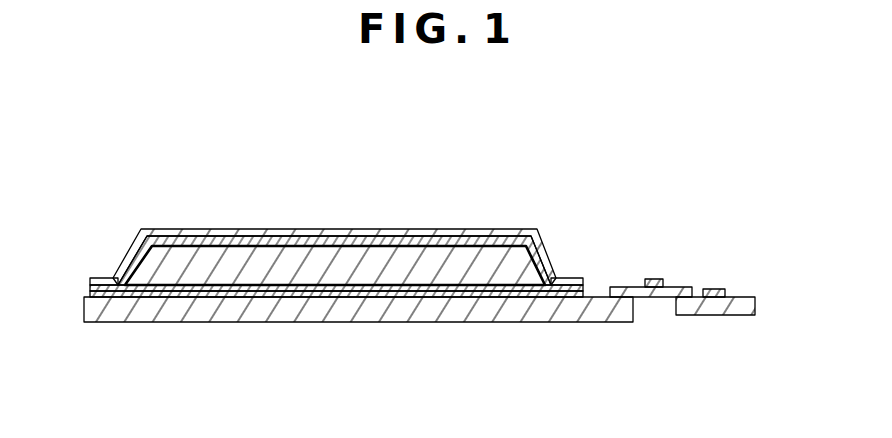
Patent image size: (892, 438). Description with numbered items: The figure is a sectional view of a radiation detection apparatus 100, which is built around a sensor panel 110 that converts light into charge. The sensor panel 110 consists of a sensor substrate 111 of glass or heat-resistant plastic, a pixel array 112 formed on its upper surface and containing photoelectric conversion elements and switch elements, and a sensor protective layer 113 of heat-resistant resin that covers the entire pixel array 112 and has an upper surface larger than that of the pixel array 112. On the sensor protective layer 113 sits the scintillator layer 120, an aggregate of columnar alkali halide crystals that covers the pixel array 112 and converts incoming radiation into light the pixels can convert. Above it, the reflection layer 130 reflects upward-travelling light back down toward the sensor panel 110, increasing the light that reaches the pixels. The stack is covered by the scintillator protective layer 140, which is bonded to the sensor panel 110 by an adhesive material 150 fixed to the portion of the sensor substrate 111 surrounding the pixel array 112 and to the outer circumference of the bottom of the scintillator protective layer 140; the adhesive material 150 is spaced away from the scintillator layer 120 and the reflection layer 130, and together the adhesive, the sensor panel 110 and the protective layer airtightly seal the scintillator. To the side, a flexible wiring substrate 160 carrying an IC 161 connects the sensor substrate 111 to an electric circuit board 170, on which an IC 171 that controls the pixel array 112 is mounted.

The radiation detection apparatus 100 is at (281, 144).
The sensor panel 110 is at (358, 348).
The sensor substrate 111 is at (257, 305).
The pixel array 112 is at (307, 295).
The sensor protective layer 113 is at (225, 371).
The scintillator layer 120 is at (532, 268).
The reflection layer 130 is at (452, 236).
The scintillator protective layer 140 is at (232, 228).
The adhesive material 150 is at (81, 288).
The wiring substrate 160 is at (681, 287).
The IC 161 is at (655, 279).
The electric circuit board 170 is at (745, 310).
The IC 171 is at (715, 289).